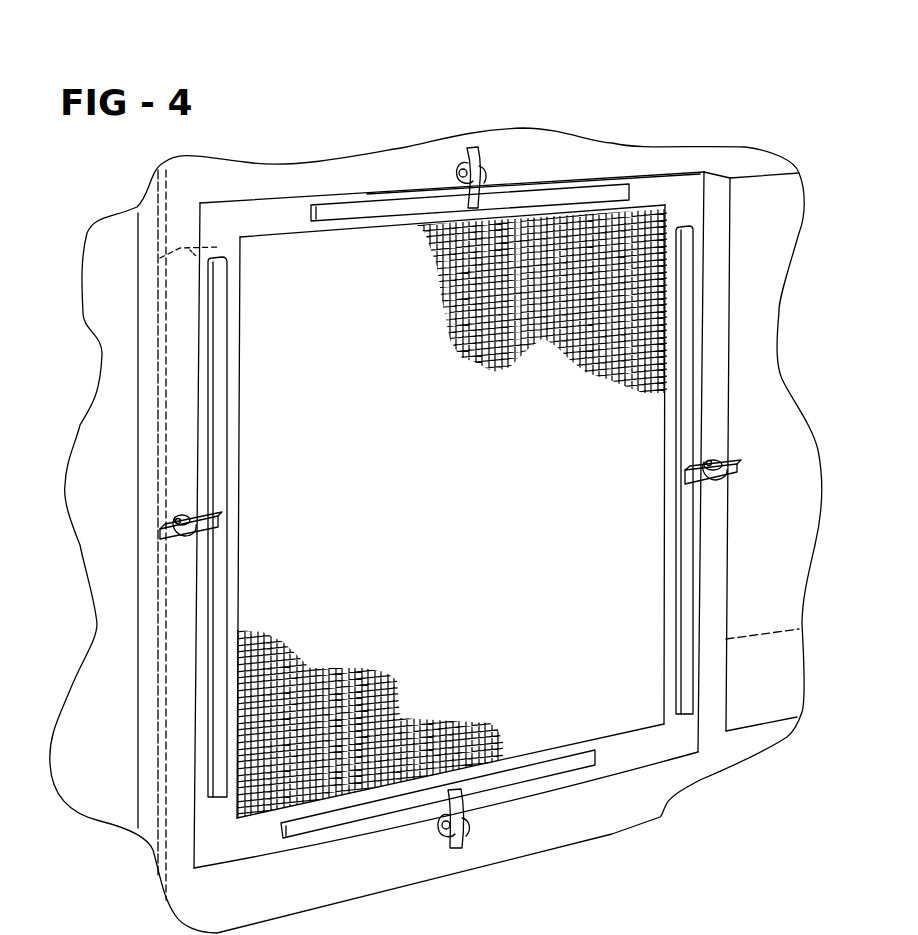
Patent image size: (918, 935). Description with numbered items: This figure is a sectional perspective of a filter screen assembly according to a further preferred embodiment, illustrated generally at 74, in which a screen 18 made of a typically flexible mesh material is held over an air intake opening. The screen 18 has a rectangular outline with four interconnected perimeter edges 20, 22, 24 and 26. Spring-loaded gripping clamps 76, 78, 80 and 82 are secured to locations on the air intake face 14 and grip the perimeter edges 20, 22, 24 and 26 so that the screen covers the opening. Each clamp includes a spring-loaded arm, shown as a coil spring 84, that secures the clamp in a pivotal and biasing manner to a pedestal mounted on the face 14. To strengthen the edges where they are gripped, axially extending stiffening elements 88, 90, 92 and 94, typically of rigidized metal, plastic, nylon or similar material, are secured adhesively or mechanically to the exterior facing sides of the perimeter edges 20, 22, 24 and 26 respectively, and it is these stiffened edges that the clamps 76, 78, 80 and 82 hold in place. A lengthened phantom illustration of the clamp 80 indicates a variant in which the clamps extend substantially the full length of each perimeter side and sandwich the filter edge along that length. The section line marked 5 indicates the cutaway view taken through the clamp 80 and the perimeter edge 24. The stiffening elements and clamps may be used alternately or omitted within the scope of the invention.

The filter screen assembly 74 is at (307, 112).
The air intake face 14 is at (396, 167).
The perimeter edge 20 is at (692, 205).
The perimeter edge 26 is at (640, 180).
The perimeter edge 24 is at (203, 440).
The perimeter edge 22 is at (260, 841).
The screen 18 is at (452, 512).
The stiffening element 94 is at (346, 210).
The stiffening element 92 is at (210, 702).
The stiffening element 88 is at (684, 527).
The stiffening element 90 is at (546, 777).
The clamp 82 is at (469, 147).
The clamp 78 is at (468, 841).
The coil spring 84 is at (170, 542).
The clamp 76 is at (729, 452).
The clamp 80 is at (177, 293).
The section line 5- 5 is at (157, 532).